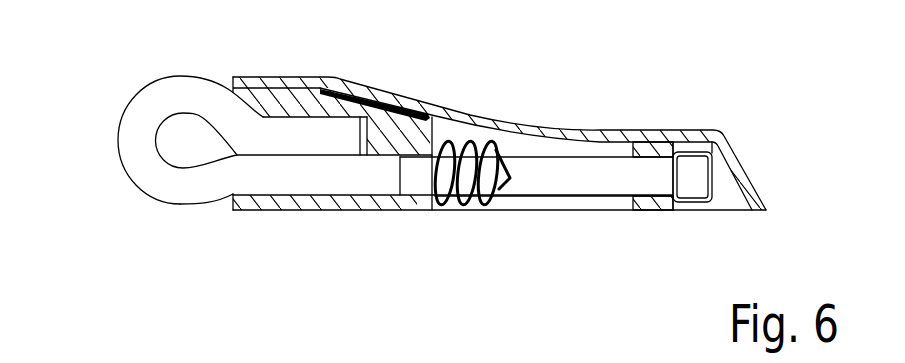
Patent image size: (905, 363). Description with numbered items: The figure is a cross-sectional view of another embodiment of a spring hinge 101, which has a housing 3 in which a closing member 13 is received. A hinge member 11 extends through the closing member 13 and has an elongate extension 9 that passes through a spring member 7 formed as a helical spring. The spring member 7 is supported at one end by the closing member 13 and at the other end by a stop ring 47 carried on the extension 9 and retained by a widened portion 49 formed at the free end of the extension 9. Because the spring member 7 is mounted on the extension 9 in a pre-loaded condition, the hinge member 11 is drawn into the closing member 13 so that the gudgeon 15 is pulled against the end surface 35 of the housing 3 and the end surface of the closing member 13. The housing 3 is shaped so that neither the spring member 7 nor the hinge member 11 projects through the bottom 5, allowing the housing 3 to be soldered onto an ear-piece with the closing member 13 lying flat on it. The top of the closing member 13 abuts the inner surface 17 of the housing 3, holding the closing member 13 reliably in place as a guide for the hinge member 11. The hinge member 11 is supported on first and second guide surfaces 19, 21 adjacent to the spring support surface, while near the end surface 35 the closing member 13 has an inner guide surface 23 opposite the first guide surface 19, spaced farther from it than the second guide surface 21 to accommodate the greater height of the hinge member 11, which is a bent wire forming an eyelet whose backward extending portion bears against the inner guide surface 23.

The spring hinge 101 is at (490, 88).
The housing 3 is at (617, 134).
The bottom 5 is at (727, 210).
The spring member 7 is at (435, 210).
The elongate extension 9 is at (553, 181).
The hinge member 11 is at (280, 180).
The closing member 13 is at (403, 132).
The gudgeon 15 is at (147, 112).
The inner surface 17 is at (290, 88).
The first guide surface 19 is at (306, 193).
The second guide surface 21 is at (400, 157).
The inner guide surface 23 is at (311, 117).
The end surface 35 is at (233, 203).
The stop ring 47 is at (657, 211).
The end nut 49 is at (690, 177).